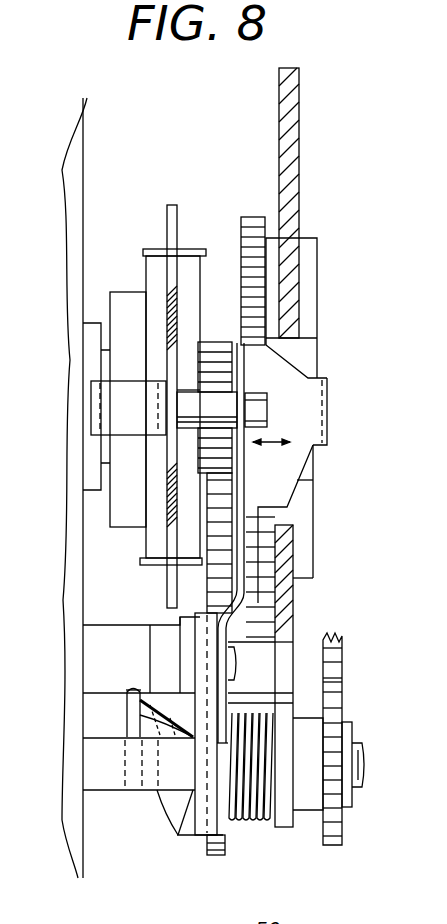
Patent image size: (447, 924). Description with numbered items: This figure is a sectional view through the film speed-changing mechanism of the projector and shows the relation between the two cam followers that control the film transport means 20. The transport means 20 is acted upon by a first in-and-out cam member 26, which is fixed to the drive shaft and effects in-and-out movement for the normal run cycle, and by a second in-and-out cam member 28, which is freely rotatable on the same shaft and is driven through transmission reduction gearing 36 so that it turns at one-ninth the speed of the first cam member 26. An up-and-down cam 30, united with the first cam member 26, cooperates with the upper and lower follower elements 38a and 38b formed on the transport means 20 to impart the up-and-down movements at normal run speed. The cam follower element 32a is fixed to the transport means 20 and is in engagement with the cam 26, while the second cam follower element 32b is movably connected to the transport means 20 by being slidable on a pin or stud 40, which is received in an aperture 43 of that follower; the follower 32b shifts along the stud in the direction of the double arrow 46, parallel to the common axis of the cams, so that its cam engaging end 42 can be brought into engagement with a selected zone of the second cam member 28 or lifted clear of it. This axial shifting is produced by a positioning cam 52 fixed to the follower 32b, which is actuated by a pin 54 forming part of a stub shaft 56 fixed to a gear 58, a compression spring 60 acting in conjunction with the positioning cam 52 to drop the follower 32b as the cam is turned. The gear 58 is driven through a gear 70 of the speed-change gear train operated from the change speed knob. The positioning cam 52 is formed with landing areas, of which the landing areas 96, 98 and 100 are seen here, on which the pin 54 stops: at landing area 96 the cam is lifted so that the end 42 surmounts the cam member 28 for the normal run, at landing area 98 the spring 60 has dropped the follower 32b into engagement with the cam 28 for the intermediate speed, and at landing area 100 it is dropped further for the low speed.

The film transport means 20 is at (180, 313).
The first rotatable in-and-out cam member 26 is at (123, 495).
The second rotatable in-and-out cam member 28 is at (313, 308).
The up-and-down cam 30 is at (185, 267).
The cam follower element 32a is at (117, 407).
The second cam follower element 32b is at (248, 488).
The transmission reduction gearing 36 is at (218, 340).
The upper follower element 38a is at (157, 248).
The lower follower element 38b is at (157, 567).
The pin 40 is at (262, 405).
The cam engaging end 42 is at (332, 402).
The aperture 43 is at (240, 370).
The double arrow 46 is at (272, 437).
The positioning cam 52 is at (195, 828).
The pin 54 is at (132, 713).
The stub shaft 56 is at (148, 793).
The gear 58 is at (342, 712).
The compression spring 60 is at (262, 817).
The gear 70 is at (342, 672).
The landing area 96 is at (145, 693).
The landing area 98 is at (160, 780).
The landing area 100 is at (175, 825).